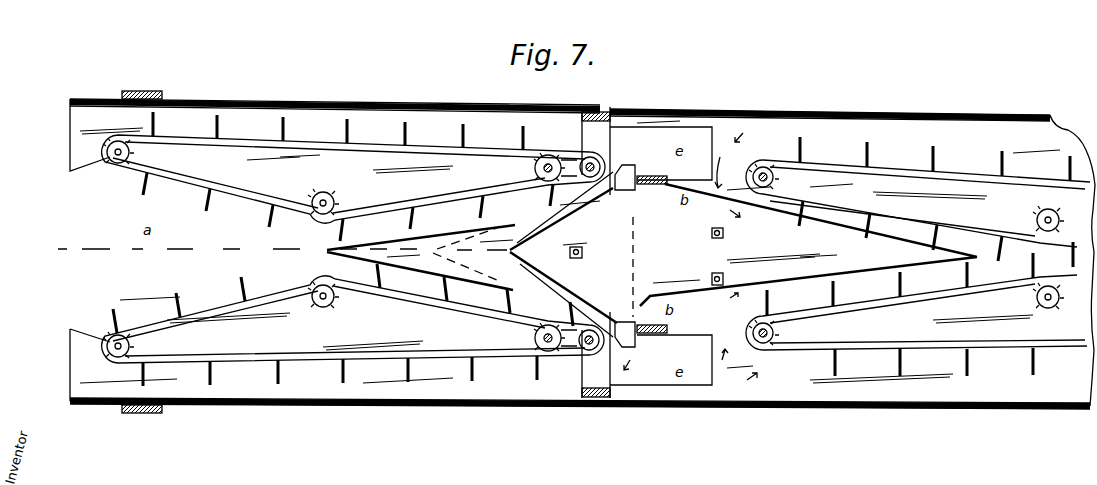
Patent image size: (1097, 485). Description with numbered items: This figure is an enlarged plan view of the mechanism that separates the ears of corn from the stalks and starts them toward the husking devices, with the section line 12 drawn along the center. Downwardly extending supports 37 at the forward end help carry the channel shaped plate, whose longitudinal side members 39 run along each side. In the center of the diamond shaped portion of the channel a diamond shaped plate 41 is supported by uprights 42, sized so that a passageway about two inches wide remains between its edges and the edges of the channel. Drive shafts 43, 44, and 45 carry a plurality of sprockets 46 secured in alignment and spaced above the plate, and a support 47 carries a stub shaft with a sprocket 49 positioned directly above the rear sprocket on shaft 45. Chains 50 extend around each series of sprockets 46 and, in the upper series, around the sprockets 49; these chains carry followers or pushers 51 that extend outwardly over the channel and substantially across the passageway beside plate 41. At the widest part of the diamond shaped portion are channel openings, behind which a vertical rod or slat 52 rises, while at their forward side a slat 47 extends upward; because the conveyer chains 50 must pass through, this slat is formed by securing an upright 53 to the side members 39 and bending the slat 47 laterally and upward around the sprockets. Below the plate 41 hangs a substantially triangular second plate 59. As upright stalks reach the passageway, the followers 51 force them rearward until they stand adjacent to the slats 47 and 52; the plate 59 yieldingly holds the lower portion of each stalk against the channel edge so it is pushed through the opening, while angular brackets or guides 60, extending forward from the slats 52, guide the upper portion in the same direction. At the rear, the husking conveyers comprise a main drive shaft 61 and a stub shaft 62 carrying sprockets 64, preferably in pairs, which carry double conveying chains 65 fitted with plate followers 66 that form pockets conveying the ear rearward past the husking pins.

The section line 12 is at (53, 252).
The supports 37 is at (142, 97).
The longitudinal side members 39 is at (783, 115).
The diamond shaped plate 41 is at (808, 245).
The uprights 42 is at (582, 253).
The drive shaft 43 is at (118, 150).
The drive shaft 44 is at (327, 200).
The drive shaft 45 is at (549, 166).
The sprockets 46 is at (128, 157).
The slat 47 is at (612, 205).
The sprocket 49 is at (593, 162).
The chains 50 is at (238, 198).
The followers 51 is at (222, 130).
The vertical rod or slat 52 is at (657, 178).
The upright 53 is at (603, 112).
The second plate 59 is at (565, 207).
The angular brackets or guides 60 is at (577, 222).
The main drive shaft 61 is at (783, 178).
The stub shaft 62 is at (1053, 214).
The sprockets 64 is at (765, 166).
The conveying chains 65 is at (880, 306).
The followers 66 is at (1005, 147).